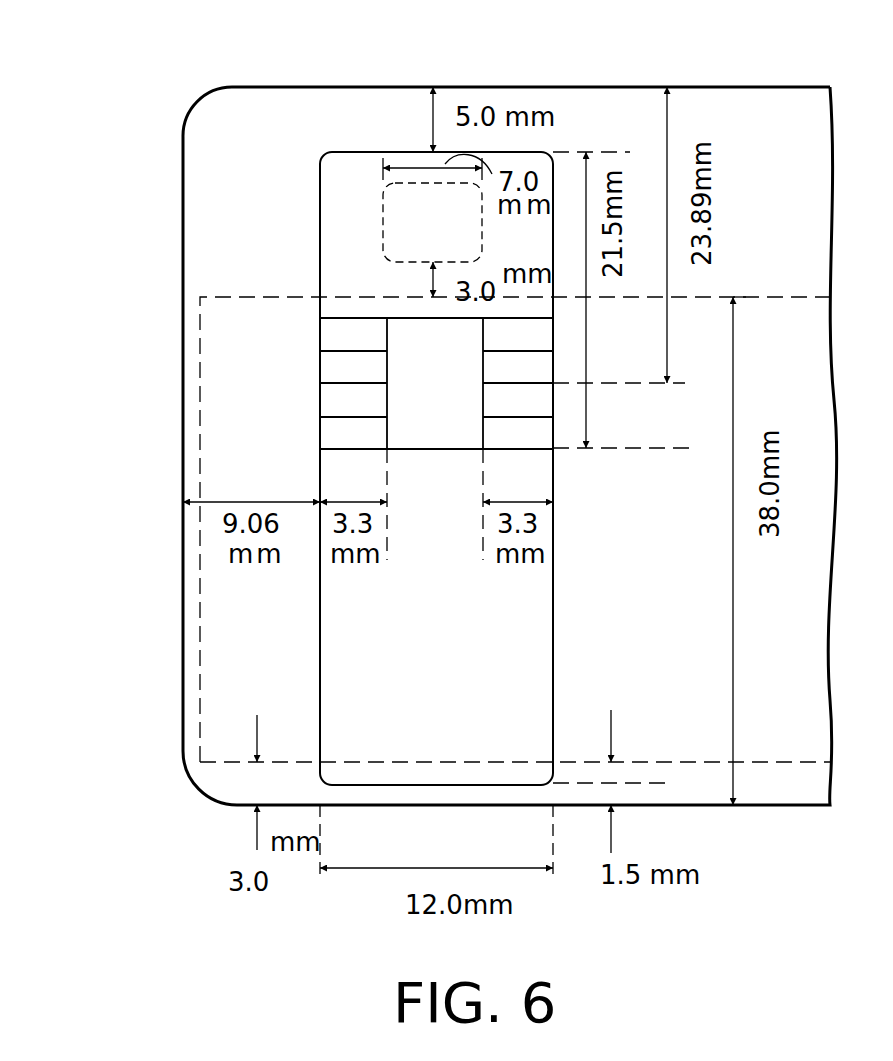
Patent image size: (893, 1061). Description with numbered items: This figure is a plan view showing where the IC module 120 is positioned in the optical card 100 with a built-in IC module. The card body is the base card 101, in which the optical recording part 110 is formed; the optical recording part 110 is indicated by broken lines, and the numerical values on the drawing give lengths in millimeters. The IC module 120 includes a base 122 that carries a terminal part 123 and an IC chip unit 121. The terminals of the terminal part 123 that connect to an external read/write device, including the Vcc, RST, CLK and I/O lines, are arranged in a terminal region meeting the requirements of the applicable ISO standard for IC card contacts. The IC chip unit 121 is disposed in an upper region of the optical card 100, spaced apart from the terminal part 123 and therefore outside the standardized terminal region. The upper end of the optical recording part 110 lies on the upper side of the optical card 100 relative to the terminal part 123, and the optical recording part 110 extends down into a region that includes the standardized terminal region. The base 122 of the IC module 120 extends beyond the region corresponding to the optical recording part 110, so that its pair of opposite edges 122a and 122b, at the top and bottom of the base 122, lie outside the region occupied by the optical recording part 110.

The optical card 100 is at (716, 86).
The base card 101 is at (572, 87).
The optical recording part 110 is at (215, 663).
The IC module 120 is at (100, 178).
The IC chip unit 121 is at (383, 217).
The base 122 is at (320, 278).
The edge of the base 122a is at (370, 152).
The edge of the base 122b is at (397, 786).
The terminal part 123 is at (320, 362).